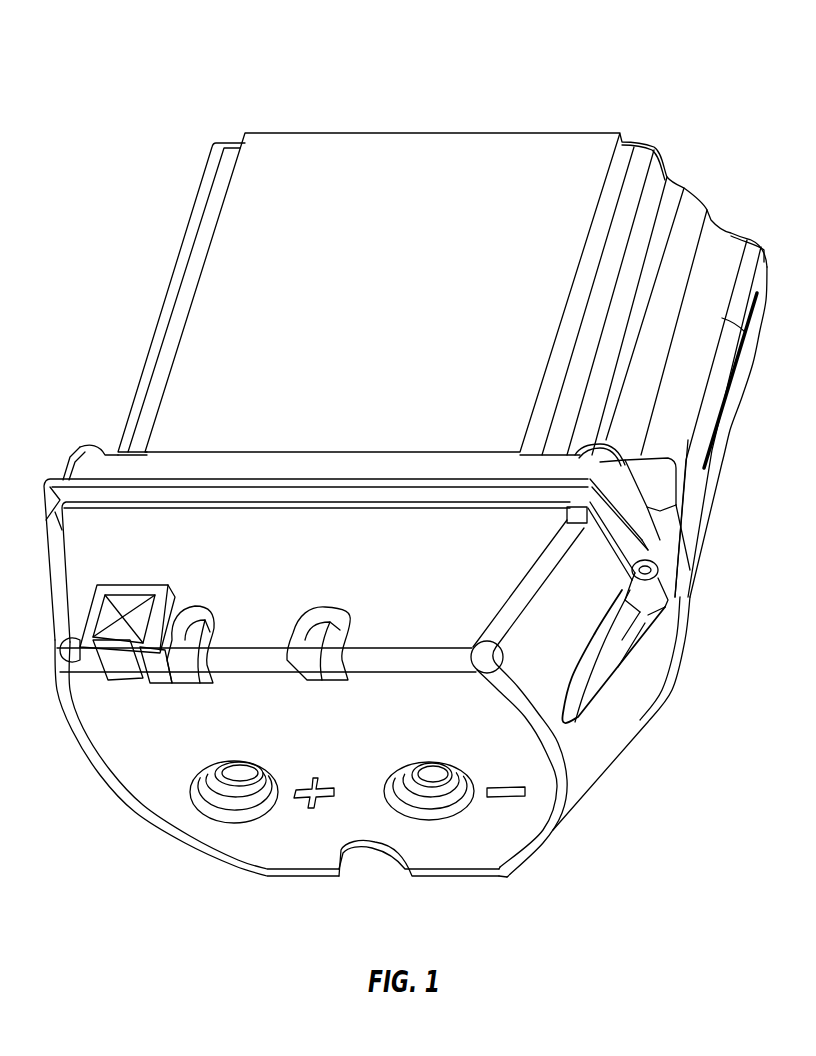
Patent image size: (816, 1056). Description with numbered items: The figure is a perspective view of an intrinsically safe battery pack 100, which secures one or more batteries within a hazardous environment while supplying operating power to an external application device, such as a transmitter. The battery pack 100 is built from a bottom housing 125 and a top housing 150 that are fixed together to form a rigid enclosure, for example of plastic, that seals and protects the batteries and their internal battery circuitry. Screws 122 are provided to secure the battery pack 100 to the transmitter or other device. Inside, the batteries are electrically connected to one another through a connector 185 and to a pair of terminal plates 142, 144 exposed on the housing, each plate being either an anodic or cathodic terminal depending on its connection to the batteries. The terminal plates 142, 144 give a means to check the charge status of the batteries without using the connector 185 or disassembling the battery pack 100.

The intrinsically safe battery pack 100 is at (672, 64).
The bottom housing 125 is at (425, 132).
The screws 122 is at (672, 570).
The connector 185 is at (135, 590).
The terminal plate 142 is at (232, 760).
The terminal plate 144 is at (422, 758).
The top housing 150 is at (157, 827).